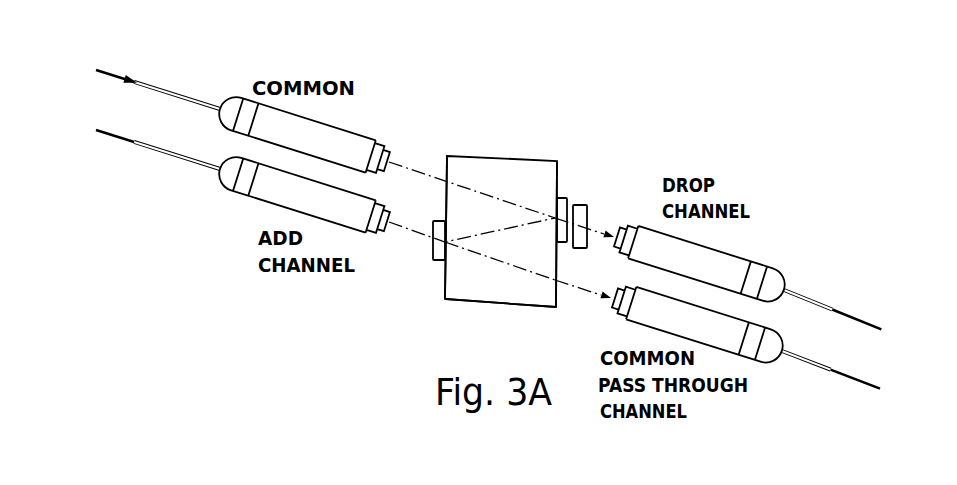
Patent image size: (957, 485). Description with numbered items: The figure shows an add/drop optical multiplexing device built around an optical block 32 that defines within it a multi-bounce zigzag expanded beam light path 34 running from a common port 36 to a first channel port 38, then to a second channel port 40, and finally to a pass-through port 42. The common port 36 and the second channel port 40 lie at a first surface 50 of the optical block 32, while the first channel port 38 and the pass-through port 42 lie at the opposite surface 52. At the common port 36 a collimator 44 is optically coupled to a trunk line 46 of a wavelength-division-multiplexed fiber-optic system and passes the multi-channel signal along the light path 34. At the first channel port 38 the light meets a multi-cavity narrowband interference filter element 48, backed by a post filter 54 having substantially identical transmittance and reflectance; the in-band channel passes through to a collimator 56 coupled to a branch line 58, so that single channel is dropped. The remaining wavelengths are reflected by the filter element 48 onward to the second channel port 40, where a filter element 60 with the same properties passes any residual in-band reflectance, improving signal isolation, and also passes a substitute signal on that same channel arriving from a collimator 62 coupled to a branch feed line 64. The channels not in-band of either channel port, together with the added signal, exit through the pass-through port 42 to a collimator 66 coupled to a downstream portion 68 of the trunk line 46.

The optical block 32 is at (480, 155).
The multi-bounce zigzag expanded beam light path 34 is at (490, 196).
The common port 36 is at (444, 180).
The first channel port 38 is at (553, 216).
The second channel port 40 is at (448, 240).
The pass-through port 42 is at (553, 280).
The collimator 44 is at (340, 133).
The trunk line 46 is at (160, 88).
The filter element 48 is at (565, 198).
The first surface 50 is at (444, 290).
The opposite surface 52 is at (557, 308).
The post filter 54 is at (583, 204).
The collimator 56 is at (746, 268).
The branch line 58 is at (833, 308).
The filter element 60 is at (432, 260).
The collimator 62 is at (277, 200).
The branch feed line 64 is at (141, 144).
The collimator 66 is at (758, 362).
The downstream portion of trunk line 68 is at (810, 368).